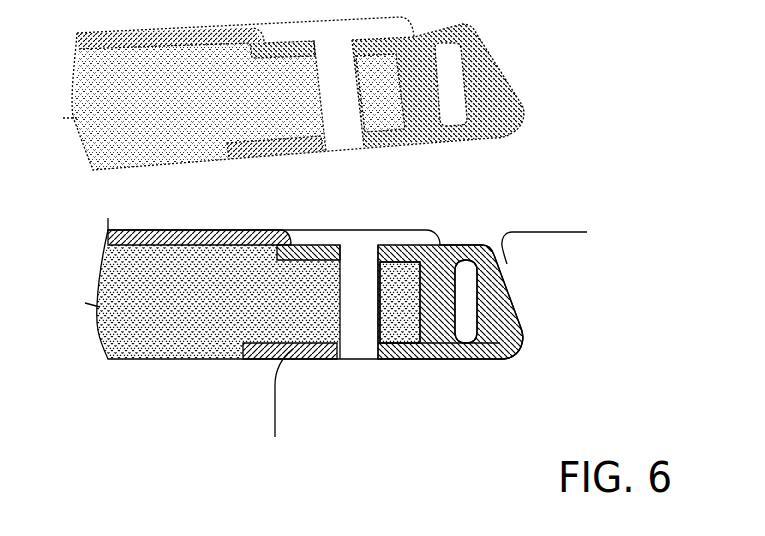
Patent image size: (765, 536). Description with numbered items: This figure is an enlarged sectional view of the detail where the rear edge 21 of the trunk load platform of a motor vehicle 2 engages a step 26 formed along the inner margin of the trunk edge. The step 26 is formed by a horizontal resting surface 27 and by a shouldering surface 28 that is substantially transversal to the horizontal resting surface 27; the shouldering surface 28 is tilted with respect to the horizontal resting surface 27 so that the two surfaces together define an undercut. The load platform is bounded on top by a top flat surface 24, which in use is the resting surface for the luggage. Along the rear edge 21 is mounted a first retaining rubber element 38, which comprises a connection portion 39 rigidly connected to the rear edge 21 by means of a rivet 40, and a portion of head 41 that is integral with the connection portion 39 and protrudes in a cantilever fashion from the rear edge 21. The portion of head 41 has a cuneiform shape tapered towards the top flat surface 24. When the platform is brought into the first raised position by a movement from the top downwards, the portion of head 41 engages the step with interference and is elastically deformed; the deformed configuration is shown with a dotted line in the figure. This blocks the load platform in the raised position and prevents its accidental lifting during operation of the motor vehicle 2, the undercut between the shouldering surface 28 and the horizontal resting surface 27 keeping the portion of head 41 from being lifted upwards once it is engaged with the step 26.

The motor vehicle 2 is at (163, 320).
The rear edge 21 is at (393, 330).
The top flat surface 24 is at (145, 229).
The step 26 is at (521, 350).
The horizontal resting surface 27 is at (458, 338).
The shouldering surface 28 is at (486, 228).
The first retaining rubber element 38 is at (453, 229).
The connection portion 39 is at (323, 244).
The rivet 40 is at (352, 323).
The portion of head 41 is at (517, 303).